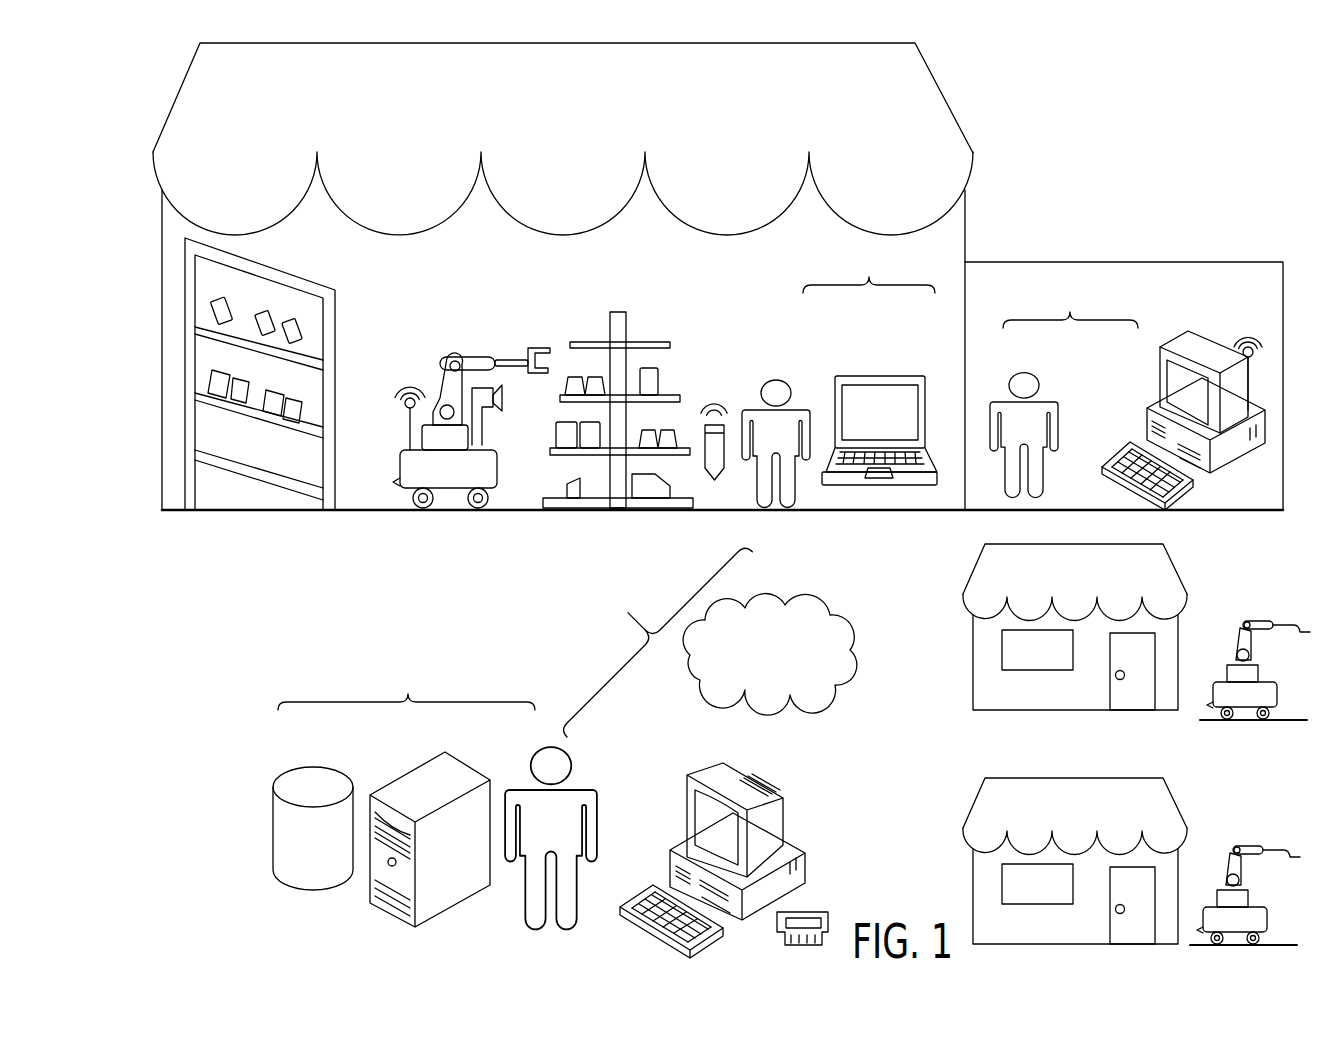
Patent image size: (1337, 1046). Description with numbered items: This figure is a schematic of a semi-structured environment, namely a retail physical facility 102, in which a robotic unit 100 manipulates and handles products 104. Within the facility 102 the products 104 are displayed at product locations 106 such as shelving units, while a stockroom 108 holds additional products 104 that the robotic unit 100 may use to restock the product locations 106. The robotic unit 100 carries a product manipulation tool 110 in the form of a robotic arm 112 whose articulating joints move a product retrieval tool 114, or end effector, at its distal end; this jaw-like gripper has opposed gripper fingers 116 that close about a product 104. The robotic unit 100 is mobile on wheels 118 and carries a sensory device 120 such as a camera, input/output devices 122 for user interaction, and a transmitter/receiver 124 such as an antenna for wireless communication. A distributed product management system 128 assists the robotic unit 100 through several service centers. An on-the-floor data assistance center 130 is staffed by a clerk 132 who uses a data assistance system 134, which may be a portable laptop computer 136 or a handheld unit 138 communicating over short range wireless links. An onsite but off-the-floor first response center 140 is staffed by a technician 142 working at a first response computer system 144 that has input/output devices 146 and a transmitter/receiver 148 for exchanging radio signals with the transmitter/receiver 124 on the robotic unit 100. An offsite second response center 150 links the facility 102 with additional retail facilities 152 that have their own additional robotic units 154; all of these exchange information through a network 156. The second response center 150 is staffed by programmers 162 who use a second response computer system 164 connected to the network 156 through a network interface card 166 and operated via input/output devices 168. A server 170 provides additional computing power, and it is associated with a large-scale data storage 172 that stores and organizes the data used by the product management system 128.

The robotic unit 100 is at (441, 330).
The physical facility 102 is at (583, 130).
The products 104 is at (212, 303).
The product locations 106 is at (648, 323).
The stockroom 108 is at (246, 486).
The product manipulation tool 110 is at (446, 338).
The robotic arm 112 is at (441, 378).
The product retrieval tool 114 is at (473, 358).
The gripper fingers 116 is at (538, 346).
The wheels 118 is at (423, 509).
The sensory device 120 is at (503, 400).
The input/output devices 122 is at (486, 432).
The transmitter/receiver 124 is at (404, 409).
The product management system 128 is at (643, 628).
The data assistance center 130 is at (839, 374).
The clerk 132 is at (795, 405).
The data assistance system 134 is at (861, 370).
The laptop computer 136 is at (895, 377).
The handheld unit 138 is at (711, 482).
The first response center 140 is at (1162, 392).
The technician 142 is at (1046, 400).
The first response computer system 144 is at (1168, 345).
The input/output devices 146 is at (1118, 456).
The transmitter/receiver 148 is at (1258, 372).
The second response center 150 is at (404, 786).
The additional retail facilities 152 is at (1094, 584).
The additional robotic units 154 is at (1262, 678).
The network 156 is at (797, 665).
The programmer 162 is at (578, 786).
The second response computer system 164 is at (793, 796).
The network interface card 166 is at (822, 912).
The input/output devices 168 is at (649, 888).
The server 170 is at (473, 770).
The large-scale data storage 172 is at (333, 768).